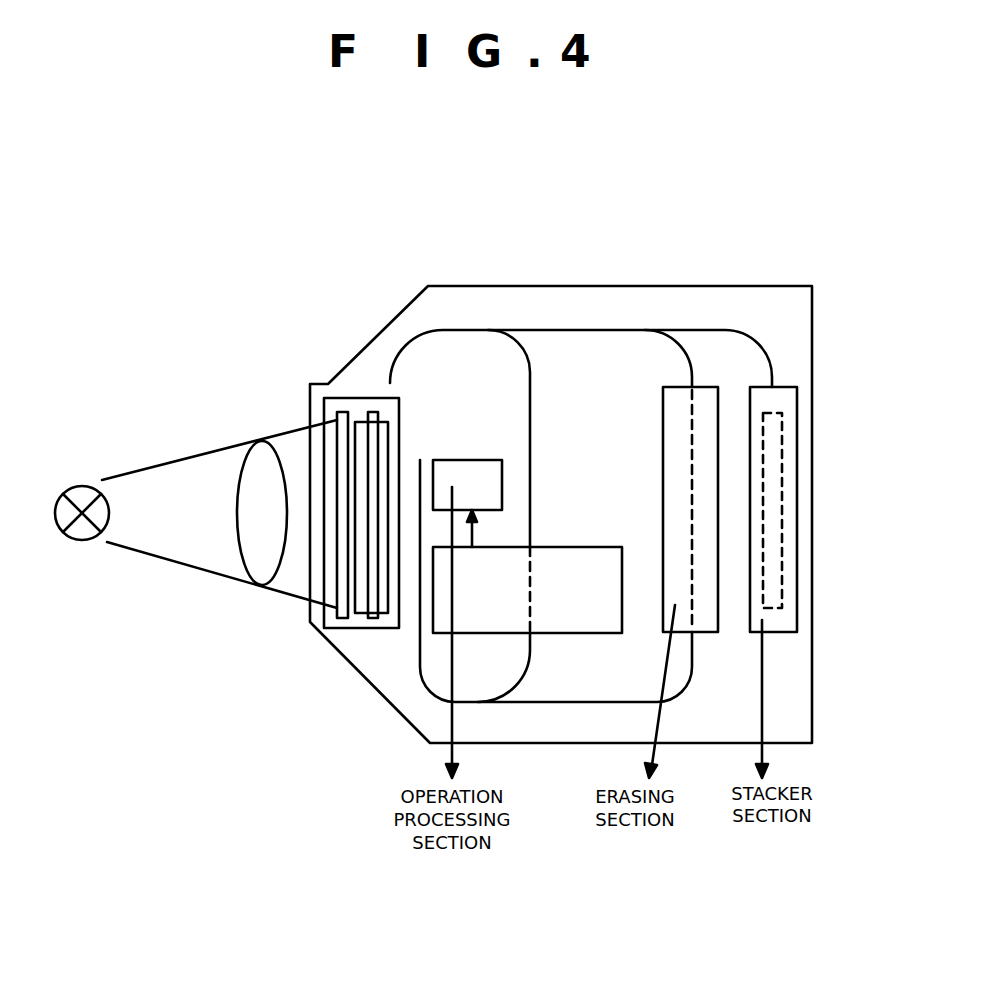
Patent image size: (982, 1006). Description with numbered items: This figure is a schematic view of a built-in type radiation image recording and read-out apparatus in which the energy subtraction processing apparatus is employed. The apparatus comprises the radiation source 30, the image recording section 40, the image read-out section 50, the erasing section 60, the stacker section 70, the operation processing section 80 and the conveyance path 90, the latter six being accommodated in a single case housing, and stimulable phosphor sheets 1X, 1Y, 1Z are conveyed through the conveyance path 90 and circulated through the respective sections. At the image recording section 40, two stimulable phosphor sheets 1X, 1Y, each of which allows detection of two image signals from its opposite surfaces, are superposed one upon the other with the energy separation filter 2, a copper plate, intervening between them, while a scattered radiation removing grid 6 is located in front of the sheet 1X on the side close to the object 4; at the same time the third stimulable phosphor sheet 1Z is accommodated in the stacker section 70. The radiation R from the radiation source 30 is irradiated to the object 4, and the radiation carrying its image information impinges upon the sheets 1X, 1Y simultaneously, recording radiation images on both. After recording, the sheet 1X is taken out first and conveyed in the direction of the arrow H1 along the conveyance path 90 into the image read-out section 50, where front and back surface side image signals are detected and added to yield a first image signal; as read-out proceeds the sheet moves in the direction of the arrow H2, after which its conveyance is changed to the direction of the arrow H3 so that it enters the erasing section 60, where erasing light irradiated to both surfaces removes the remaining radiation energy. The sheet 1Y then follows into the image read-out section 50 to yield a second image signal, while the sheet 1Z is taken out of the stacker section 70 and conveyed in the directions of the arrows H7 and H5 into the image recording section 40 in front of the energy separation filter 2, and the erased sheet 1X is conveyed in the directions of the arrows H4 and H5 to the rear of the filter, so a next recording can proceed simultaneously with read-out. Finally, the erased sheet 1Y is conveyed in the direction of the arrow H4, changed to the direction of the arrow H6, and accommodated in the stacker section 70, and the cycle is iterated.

The radiation source 30 is at (78, 540).
The radiation R is at (160, 465).
The object 4 is at (240, 463).
The scattered radiation removing grid 6 is at (340, 417).
The energy separation filter 2 is at (373, 410).
The image recording section 40 is at (362, 632).
The stimulable phosphor sheet 1X is at (347, 565).
The stimulable phosphor sheet 1Y is at (393, 595).
The stimulable phosphor sheet 1Z is at (782, 548).
The image read-out section 50 is at (583, 545).
The erasing section 60 is at (662, 420).
The stacker section 70 is at (773, 633).
The operation processing section 80 is at (463, 458).
The conveyance path 90 is at (688, 690).
The arrow H1 is at (517, 433).
The arrow H2 is at (437, 657).
The arrow H3 is at (560, 713).
The arrow H4 is at (603, 340).
The arrow H5 is at (382, 365).
The arrow H6 is at (665, 317).
The arrow H7 is at (712, 318).